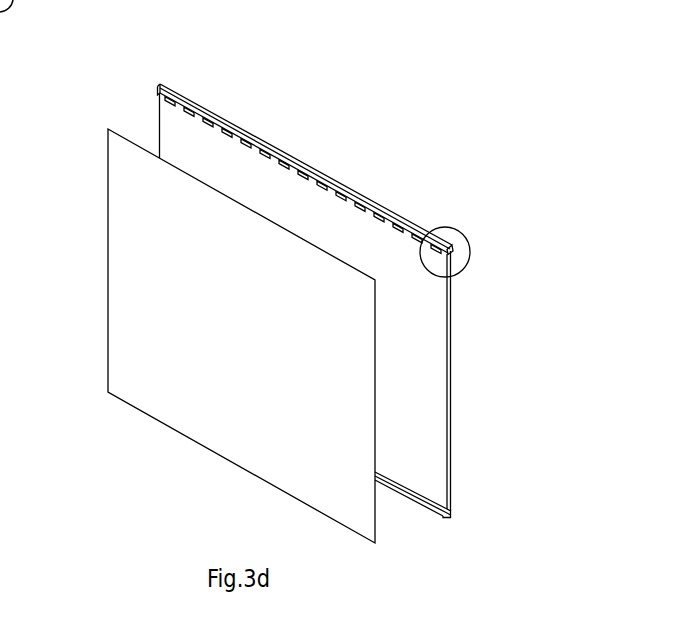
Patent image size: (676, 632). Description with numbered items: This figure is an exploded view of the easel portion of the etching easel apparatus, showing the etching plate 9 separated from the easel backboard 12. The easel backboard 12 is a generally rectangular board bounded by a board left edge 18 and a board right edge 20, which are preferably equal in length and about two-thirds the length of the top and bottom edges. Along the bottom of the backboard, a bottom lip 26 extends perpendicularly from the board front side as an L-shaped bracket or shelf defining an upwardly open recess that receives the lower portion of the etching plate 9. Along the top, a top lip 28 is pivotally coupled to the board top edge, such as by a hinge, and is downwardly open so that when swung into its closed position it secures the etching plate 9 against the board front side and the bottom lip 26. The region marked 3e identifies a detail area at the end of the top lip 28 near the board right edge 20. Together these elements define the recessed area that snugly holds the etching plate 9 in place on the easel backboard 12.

The easel backboard 12 is at (254, 93).
The board left edge 18 is at (158, 118).
The top lip 28 is at (323, 177).
The board right edge 20 is at (449, 391).
The bottom lip 26 is at (417, 508).
The detail view circle 3e is at (463, 232).
The etching plate 9 is at (147, 297).